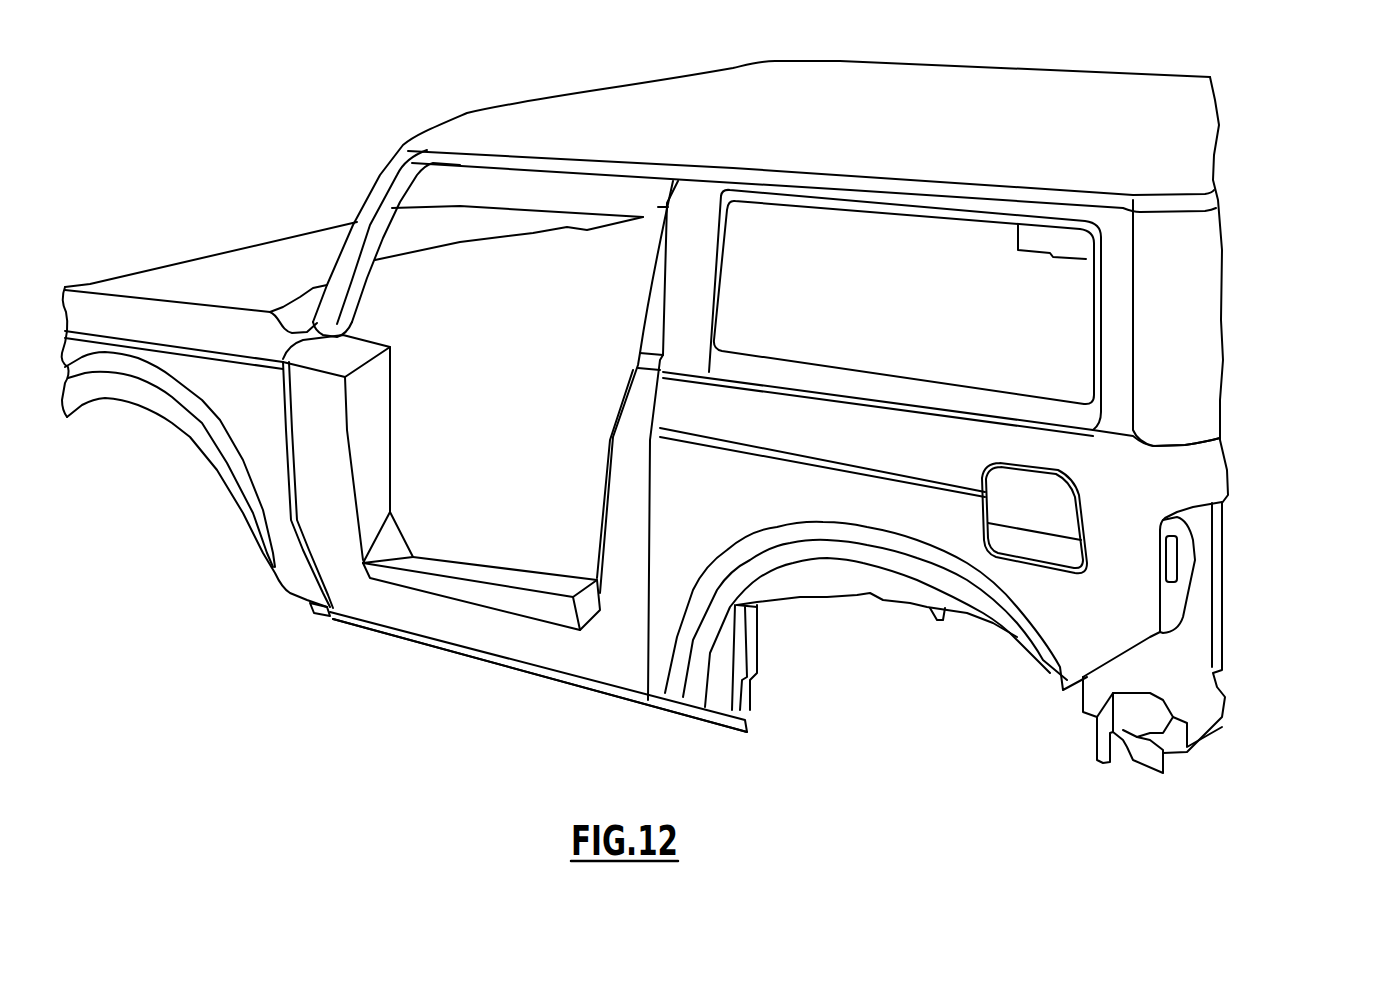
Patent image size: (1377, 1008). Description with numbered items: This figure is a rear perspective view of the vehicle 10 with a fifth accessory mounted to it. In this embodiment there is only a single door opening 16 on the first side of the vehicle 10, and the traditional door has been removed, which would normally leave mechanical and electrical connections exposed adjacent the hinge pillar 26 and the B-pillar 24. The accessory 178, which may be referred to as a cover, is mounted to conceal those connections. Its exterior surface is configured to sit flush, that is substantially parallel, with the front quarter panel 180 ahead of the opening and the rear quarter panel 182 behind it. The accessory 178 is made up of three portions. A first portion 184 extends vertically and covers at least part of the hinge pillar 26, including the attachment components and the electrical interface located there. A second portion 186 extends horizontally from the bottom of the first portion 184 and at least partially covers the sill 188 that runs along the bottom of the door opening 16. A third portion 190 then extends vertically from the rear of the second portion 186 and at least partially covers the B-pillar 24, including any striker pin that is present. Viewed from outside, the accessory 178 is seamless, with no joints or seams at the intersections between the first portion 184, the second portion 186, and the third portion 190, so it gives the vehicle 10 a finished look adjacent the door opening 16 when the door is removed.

The vehicle 10 is at (712, 462).
The door opening 16 is at (535, 420).
The B-pillar 24 is at (634, 371).
The hinge pillar 26 is at (353, 338).
The accessory 178 is at (441, 482).
The front quarter panel 180 is at (215, 397).
The rear quarter panel 182 is at (850, 500).
The first portion 184 is at (372, 472).
The second portion 186 is at (450, 625).
The sill 188 is at (477, 662).
The third portion 190 is at (632, 508).